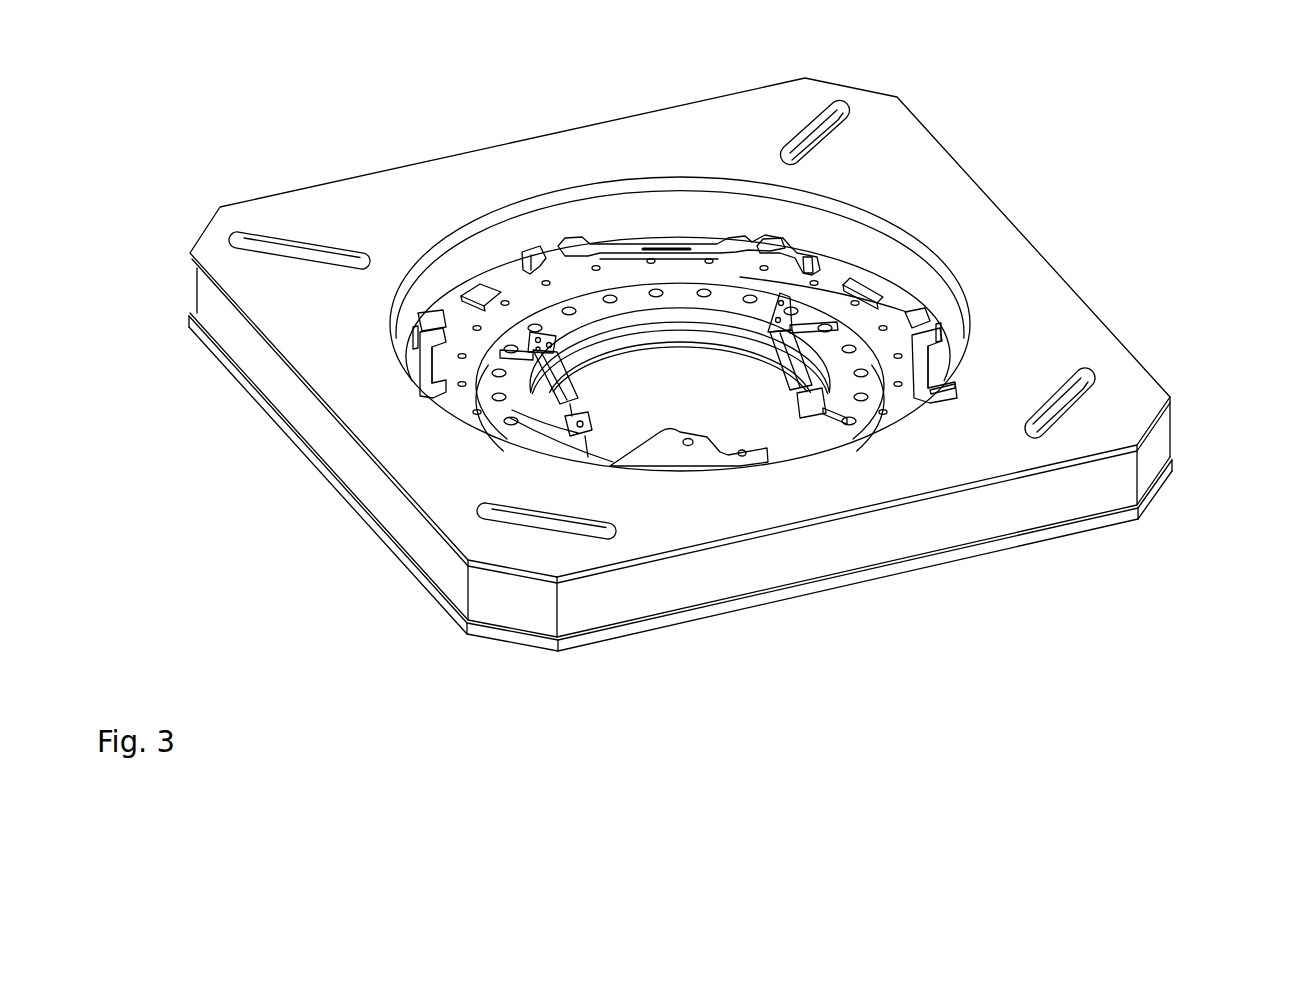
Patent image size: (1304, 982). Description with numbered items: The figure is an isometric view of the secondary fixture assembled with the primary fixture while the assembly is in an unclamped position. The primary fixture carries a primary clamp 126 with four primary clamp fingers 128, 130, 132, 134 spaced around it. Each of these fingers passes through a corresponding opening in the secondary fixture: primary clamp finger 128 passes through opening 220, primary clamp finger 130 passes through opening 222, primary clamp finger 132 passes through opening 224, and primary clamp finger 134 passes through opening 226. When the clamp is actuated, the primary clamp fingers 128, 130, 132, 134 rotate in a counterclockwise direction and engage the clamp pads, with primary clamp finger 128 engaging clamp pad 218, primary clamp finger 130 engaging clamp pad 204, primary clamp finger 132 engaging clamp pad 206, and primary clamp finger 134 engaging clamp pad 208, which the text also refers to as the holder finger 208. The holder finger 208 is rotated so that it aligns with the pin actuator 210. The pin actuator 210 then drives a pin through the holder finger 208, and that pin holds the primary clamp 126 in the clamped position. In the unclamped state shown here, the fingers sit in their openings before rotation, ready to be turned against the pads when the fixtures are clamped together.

The primary clamp 126 is at (868, 412).
The primary clamp finger 128 is at (923, 303).
The primary clamp finger 130 is at (797, 247).
The primary clamp finger 132 is at (592, 245).
The primary clamp finger 134 is at (427, 373).
The clamp pad 204 is at (868, 287).
The clamp pad 206 is at (670, 250).
The holder finger 208 is at (478, 290).
The pin actuator 210 is at (751, 434).
The clamp pad 218 is at (950, 395).
The opening 220 is at (940, 330).
The opening 222 is at (808, 263).
The opening 224 is at (532, 256).
The opening 226 is at (422, 400).